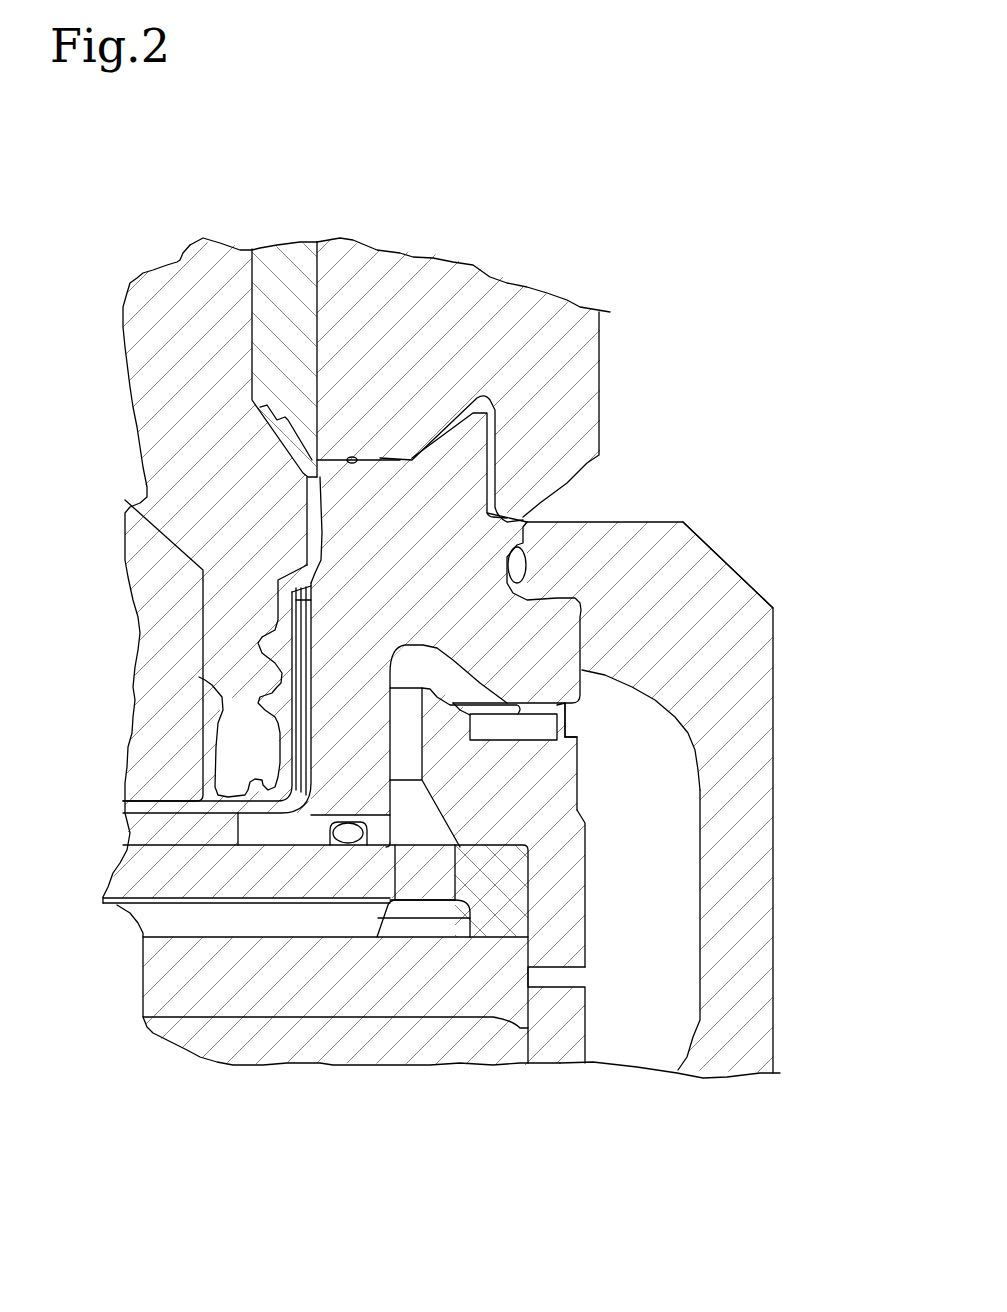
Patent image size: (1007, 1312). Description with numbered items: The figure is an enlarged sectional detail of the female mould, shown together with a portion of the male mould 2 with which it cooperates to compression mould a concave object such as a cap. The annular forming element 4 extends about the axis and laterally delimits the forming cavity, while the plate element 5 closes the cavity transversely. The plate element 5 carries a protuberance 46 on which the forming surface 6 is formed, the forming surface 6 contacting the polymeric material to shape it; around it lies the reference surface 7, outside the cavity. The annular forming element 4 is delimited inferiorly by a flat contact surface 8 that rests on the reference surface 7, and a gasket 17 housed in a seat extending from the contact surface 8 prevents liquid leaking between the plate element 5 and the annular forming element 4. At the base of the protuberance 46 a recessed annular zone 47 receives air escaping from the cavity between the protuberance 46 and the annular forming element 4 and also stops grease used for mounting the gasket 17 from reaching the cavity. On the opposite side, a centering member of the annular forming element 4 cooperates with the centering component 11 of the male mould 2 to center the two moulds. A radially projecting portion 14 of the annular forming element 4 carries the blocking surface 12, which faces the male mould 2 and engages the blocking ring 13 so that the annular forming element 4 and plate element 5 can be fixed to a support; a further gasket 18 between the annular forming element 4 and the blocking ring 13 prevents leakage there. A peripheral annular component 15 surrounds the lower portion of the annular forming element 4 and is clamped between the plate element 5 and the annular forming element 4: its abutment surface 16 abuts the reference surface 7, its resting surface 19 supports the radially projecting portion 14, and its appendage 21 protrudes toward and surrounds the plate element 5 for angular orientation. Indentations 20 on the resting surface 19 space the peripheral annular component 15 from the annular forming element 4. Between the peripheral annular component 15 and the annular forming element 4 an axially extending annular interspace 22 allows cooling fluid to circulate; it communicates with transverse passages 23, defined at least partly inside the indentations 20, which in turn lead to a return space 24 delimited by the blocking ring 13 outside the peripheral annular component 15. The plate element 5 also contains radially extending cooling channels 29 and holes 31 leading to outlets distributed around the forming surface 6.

The male mould 2 is at (155, 737).
The annular forming element 4 is at (404, 520).
The plate element 5 is at (167, 865).
The forming surface 6 is at (158, 813).
The reference surface 7 is at (423, 845).
The contact surface 8 is at (287, 847).
The centering component 11 is at (577, 395).
The blocking surface 12 is at (497, 727).
The blocking ring 13 is at (703, 590).
The radially projecting portion 14 is at (568, 690).
The peripheral annular component 15 is at (558, 772).
The abutment surface 16 is at (482, 847).
The gasket 17 is at (348, 833).
The further gasket 18 is at (458, 540).
The resting surface 19 is at (570, 688).
The indentations 20 is at (570, 723).
The appendage 21 is at (567, 920).
The annular interspace 22 is at (407, 728).
The transverse passages 23 is at (537, 703).
The return space 24 is at (650, 900).
The cooling channels 29 is at (157, 923).
The holes 31 is at (396, 880).
The protuberance 46 is at (265, 833).
The annular zone 47 is at (200, 847).